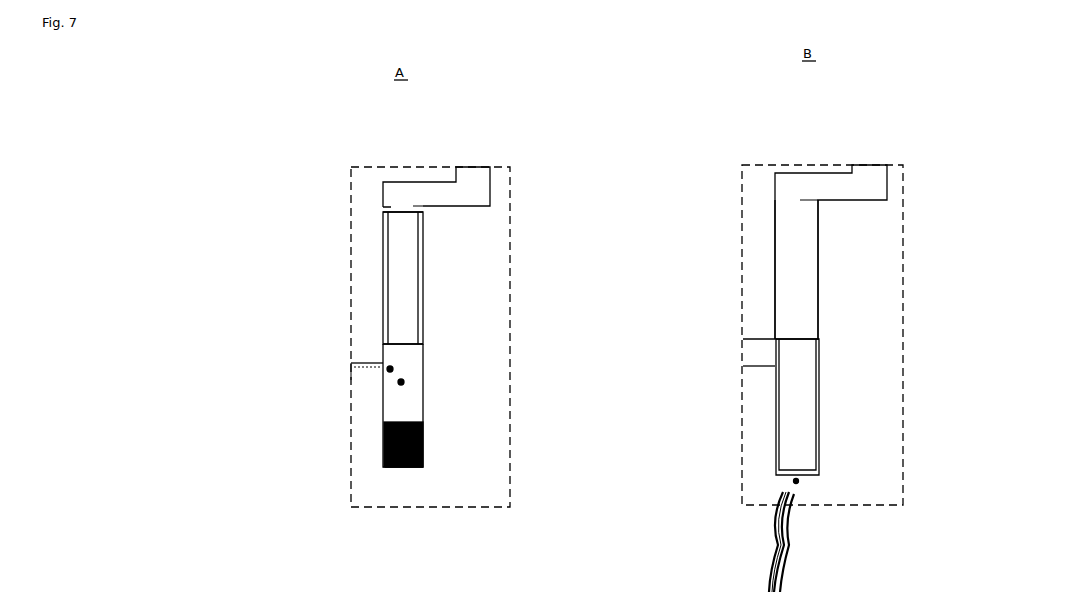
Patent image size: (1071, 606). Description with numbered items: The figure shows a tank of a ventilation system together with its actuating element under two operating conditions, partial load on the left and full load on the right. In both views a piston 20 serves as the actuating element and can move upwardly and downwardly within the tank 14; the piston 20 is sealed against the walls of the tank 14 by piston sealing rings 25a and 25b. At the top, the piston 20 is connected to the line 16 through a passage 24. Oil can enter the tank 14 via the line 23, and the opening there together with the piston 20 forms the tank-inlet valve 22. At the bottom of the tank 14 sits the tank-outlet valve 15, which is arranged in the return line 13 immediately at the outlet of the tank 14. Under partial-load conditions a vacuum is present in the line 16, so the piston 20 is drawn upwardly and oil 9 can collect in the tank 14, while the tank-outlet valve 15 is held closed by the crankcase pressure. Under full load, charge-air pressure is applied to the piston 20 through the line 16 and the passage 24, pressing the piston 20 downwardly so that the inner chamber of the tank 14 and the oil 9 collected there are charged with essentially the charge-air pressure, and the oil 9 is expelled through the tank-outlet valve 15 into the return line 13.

The oil 9 is at (361, 366).
The return line 13 is at (780, 530).
The tank 14 is at (424, 389).
The tank-outlet valve 15 is at (416, 468).
The line 16 is at (468, 176).
The piston 20 is at (416, 298).
The tank-inlet valve 22 is at (378, 368).
The line 23 is at (355, 362).
The passage 24 is at (408, 205).
The piston sealing ring 25a is at (383, 213).
The piston sealing ring 25b is at (384, 343).